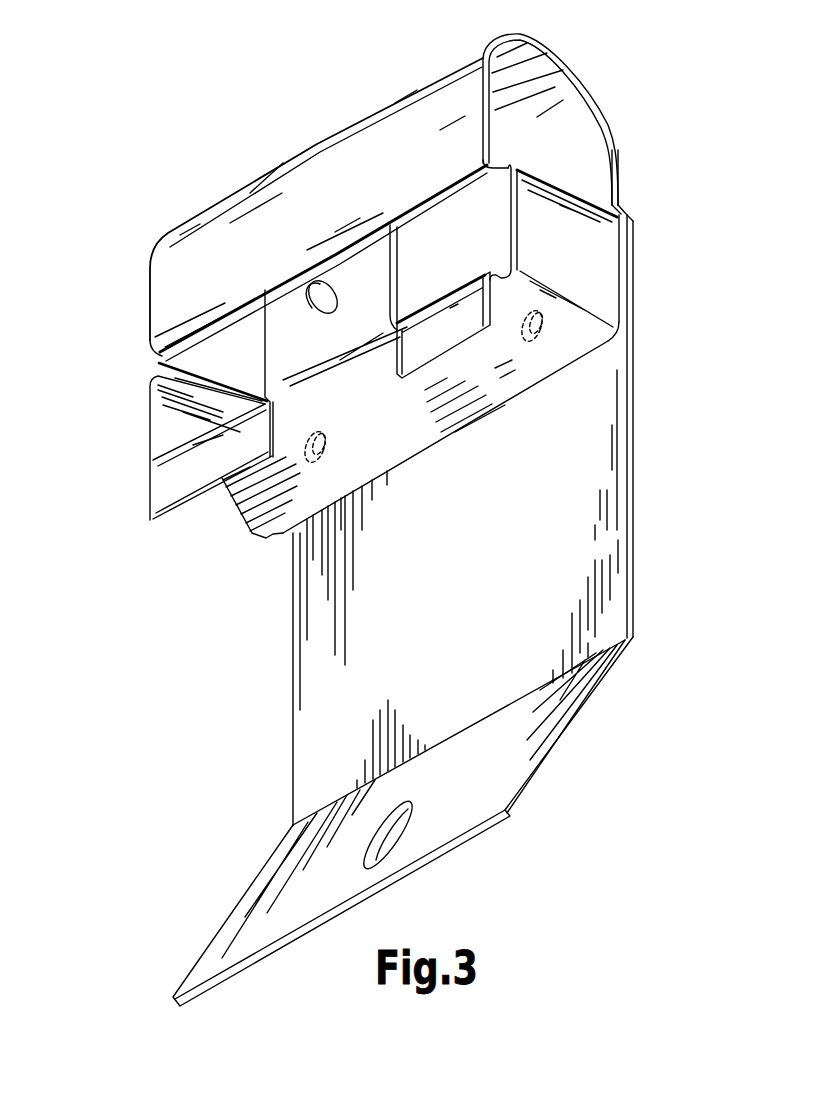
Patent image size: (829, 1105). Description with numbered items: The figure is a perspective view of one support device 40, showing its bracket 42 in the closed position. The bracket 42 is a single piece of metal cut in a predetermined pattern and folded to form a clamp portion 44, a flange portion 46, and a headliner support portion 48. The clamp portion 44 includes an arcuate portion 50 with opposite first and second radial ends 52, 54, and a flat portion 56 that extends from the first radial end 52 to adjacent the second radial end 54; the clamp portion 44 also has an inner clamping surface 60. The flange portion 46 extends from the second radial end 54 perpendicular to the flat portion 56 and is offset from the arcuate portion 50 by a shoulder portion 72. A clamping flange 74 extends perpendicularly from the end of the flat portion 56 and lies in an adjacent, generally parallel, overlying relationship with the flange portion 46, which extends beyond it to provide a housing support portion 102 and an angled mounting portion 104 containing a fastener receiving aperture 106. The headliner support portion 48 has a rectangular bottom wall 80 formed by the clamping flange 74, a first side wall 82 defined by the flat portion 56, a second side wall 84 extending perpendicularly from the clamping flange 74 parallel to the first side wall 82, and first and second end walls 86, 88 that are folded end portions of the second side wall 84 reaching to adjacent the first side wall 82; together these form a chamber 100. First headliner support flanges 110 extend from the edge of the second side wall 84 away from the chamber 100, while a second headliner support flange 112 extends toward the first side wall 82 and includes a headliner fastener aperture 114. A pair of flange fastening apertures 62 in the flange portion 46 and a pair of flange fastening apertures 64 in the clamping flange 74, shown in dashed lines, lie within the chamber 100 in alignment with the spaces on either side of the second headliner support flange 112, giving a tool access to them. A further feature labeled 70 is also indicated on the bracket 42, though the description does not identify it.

The support device 40 is at (242, 89).
The bracket 42 is at (283, 33).
The clamp portion 44 is at (616, 37).
The flange portion 46 is at (608, 739).
The headliner support portion 48 is at (290, 318).
The arcuate portion 50 is at (536, 74).
The first radial end 52 is at (481, 152).
The second radial end 54 is at (620, 176).
The flat portion 56 is at (507, 170).
The inner clamping surface 60 is at (596, 160).
The flange fastening apertures 62 is at (456, 475).
The flange fastening apertures 64 is at (320, 452).
The corner 70 is at (631, 326).
The shoulder portion 72 is at (633, 211).
The clamping flange 74 is at (524, 437).
The bottom wall 80 is at (613, 341).
The first side wall 82 is at (437, 218).
The second side wall 84 is at (500, 366).
The first end wall 86 is at (178, 418).
The second end wall 88 is at (572, 263).
The chamber 100 is at (227, 350).
The housing support portion 102 is at (565, 527).
The angled mounting portion 104 is at (478, 790).
The fastener receiving aperture 106 is at (396, 838).
The first headliner support flanges 110 is at (212, 467).
The second headliner support flange 112 is at (370, 264).
The headliner fastener aperture 114 is at (322, 296).